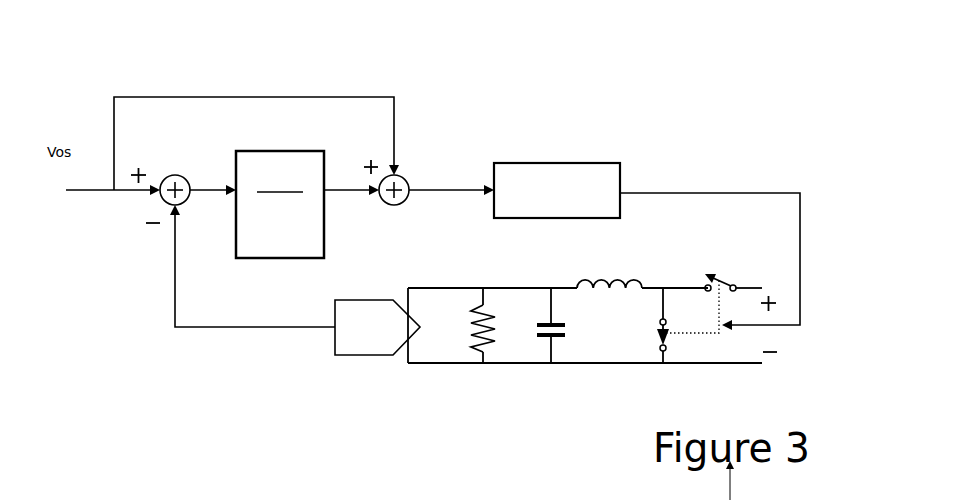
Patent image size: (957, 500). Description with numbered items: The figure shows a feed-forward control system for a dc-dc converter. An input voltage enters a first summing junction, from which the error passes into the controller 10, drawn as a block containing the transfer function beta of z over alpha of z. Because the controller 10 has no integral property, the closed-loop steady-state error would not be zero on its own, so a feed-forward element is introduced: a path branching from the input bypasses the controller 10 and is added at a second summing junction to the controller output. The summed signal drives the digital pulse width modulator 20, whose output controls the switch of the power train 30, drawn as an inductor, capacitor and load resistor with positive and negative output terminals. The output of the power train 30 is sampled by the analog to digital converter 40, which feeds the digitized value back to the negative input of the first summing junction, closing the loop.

The controller 10 is at (284, 118).
The digital pulse width modulator (DPWM) 20 is at (584, 143).
The power train 30 is at (591, 377).
The analog to digital converter (ADC) 40 is at (325, 371).